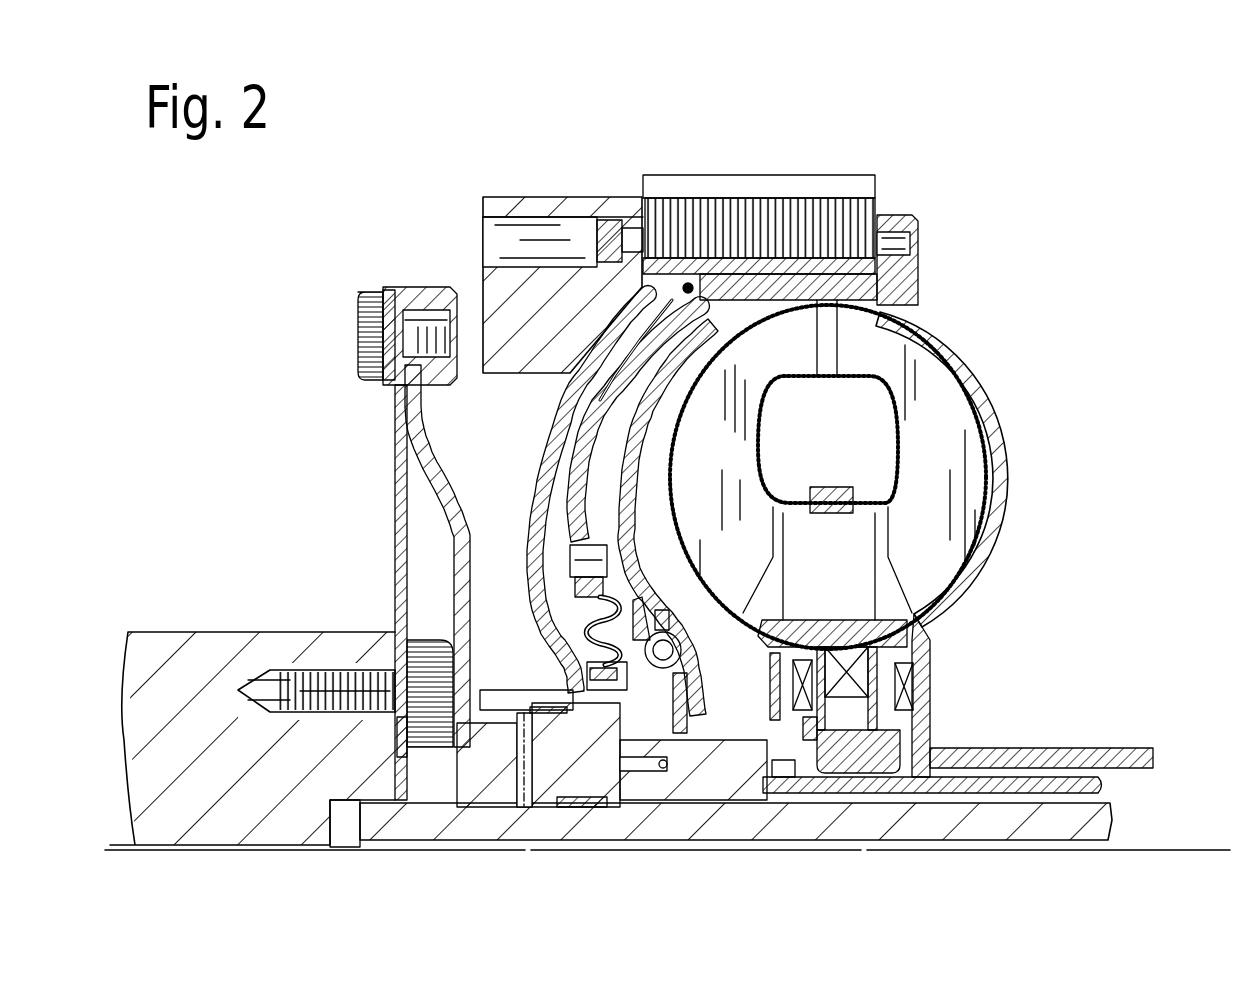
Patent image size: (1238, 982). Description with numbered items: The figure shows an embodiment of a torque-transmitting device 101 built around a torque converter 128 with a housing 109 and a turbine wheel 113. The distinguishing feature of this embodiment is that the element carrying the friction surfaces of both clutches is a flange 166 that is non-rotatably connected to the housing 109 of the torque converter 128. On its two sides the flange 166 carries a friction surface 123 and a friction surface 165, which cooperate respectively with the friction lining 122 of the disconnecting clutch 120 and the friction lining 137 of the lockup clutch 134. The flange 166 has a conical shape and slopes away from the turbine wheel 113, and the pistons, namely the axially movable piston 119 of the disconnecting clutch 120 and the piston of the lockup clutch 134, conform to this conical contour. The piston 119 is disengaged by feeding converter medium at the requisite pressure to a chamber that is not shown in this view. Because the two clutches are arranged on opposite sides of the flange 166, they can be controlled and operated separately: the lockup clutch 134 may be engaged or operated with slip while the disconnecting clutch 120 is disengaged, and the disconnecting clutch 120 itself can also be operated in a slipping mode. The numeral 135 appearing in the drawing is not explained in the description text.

The torque-transmitting device 101 is at (1033, 152).
The housing 109 is at (773, 288).
The turbine wheel 113 is at (900, 380).
The piston 119 is at (560, 452).
The disconnecting clutch 120 is at (590, 403).
The friction lining 122 is at (667, 293).
The friction surface 123 is at (633, 370).
The torque converter 128 is at (968, 282).
The lockup clutch 134 is at (640, 457).
The inner bulb 135 is at (627, 515).
The friction lining 137 is at (712, 351).
The friction surface 165 is at (685, 333).
The flange 166 is at (689, 284).